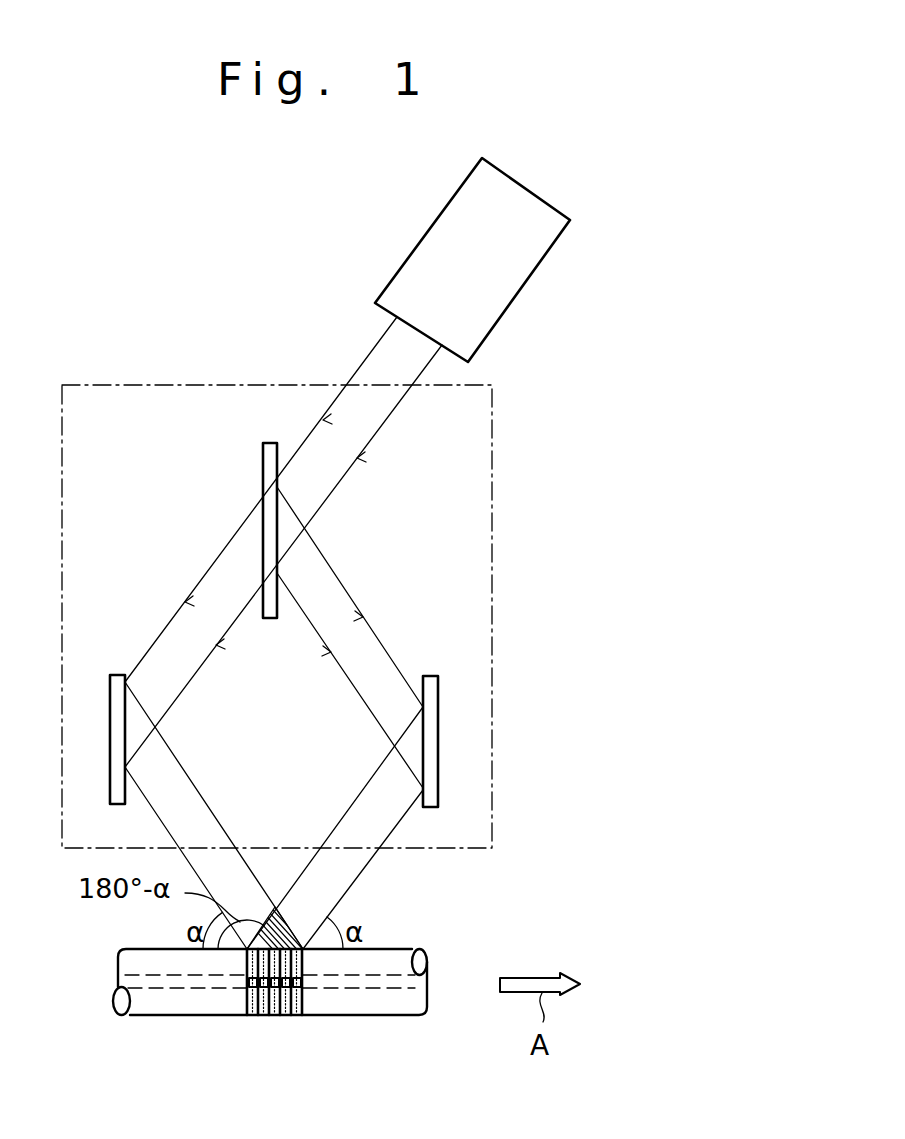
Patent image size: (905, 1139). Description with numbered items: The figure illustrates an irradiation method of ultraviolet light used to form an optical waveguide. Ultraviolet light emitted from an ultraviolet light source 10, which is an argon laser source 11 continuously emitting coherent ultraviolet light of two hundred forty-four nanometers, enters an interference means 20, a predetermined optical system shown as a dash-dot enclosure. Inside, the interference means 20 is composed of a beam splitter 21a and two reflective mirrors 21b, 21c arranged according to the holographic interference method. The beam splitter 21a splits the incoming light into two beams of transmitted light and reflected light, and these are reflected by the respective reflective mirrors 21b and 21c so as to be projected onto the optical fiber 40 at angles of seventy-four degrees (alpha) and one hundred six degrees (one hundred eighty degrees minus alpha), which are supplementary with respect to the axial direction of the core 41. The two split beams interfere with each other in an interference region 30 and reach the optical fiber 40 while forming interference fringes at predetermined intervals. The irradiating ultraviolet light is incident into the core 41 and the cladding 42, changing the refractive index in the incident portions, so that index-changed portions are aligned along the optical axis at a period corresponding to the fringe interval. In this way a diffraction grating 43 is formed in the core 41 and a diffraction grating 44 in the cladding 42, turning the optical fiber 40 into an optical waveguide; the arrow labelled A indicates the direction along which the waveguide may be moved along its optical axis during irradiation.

The ultraviolet light source 10 is at (517, 260).
The argon laser source 11 is at (517, 297).
The interference means 20 is at (492, 613).
The beam splitter 21a is at (263, 468).
The reflective mirror 21b is at (110, 680).
The reflective mirror 21c is at (437, 685).
The interference region 30 is at (292, 925).
The optical fiber 40 is at (267, 1017).
The core 41 is at (200, 990).
The cladding 42 is at (145, 1017).
The diffraction grating 43 is at (303, 985).
The diffraction grating 44 is at (243, 1015).